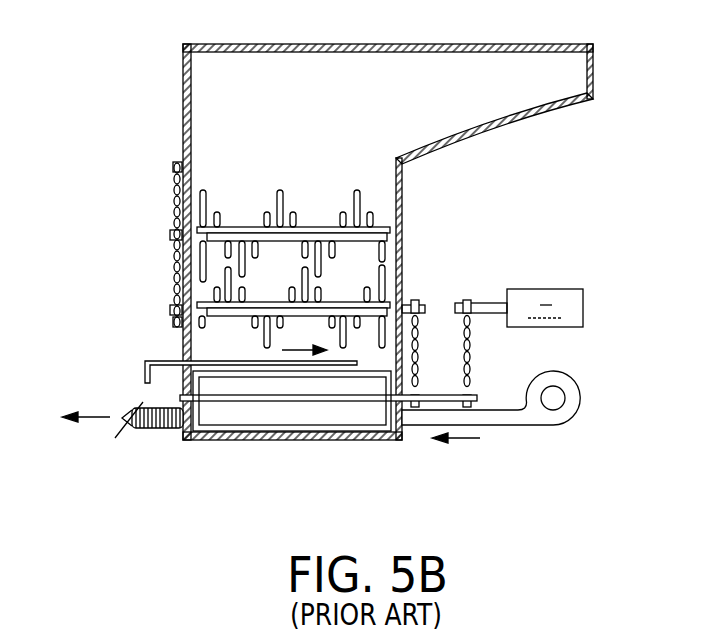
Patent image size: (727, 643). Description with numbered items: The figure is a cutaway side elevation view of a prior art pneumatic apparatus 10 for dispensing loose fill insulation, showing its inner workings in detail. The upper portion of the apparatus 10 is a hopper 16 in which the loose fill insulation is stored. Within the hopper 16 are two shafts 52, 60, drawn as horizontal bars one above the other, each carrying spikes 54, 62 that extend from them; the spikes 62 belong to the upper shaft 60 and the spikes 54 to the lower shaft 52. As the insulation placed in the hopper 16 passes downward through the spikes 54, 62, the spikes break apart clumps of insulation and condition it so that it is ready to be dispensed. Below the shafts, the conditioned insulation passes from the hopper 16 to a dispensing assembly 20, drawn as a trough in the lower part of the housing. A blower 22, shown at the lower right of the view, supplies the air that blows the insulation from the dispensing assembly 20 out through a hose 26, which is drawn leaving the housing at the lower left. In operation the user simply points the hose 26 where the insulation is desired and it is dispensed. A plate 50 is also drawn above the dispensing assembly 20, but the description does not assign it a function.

The pneumatic apparatus 10 is at (158, 84).
The hopper 16 is at (345, 101).
The dispensing assembly 20 is at (358, 396).
The blower 22 is at (580, 384).
The hose 26 is at (160, 430).
The plate 50 is at (183, 342).
The shaft 52 is at (290, 299).
The spikes 54 is at (203, 323).
The shaft 60 is at (265, 227).
The spikes 62 is at (203, 217).